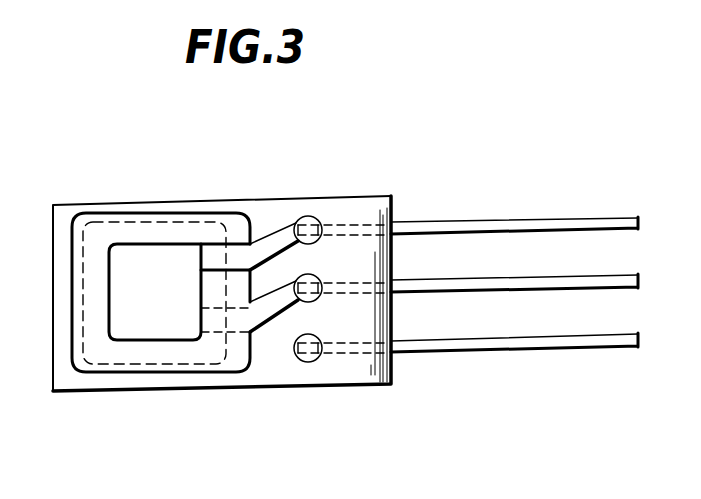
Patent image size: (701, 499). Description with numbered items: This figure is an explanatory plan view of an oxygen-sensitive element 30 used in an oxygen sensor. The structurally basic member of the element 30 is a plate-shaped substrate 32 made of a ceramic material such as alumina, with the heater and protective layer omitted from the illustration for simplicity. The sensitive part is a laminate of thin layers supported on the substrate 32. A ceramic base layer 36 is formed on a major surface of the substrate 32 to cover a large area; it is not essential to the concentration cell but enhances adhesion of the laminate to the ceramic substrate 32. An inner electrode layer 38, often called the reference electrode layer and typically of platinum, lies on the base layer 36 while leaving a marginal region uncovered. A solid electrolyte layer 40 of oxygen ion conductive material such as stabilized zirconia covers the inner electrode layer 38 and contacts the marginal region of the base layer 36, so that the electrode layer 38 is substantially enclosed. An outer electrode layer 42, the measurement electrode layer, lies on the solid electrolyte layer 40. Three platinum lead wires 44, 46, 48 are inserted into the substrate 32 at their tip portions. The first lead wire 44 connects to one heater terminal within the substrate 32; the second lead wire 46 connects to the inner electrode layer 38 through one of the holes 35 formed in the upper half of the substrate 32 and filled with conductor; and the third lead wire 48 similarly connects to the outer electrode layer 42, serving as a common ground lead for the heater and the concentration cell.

The oxygen-sensitive element 30 is at (353, 196).
The substrate 32 is at (283, 378).
The holes 35 is at (310, 215).
The base layer 36 is at (132, 358).
The inner electrode layer 38 is at (238, 326).
The solid electrolyte layer 40 is at (117, 225).
The outer electrode layer 42 is at (173, 253).
The first lead wire 44 is at (485, 341).
The second lead wire 46 is at (513, 279).
The third lead wire 48 is at (483, 221).